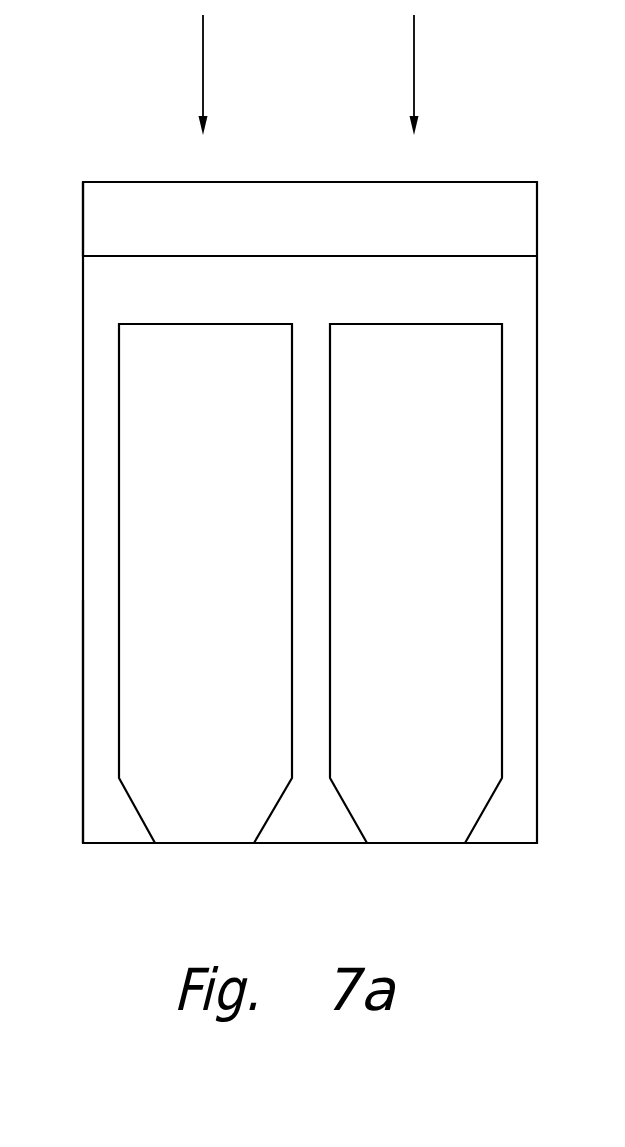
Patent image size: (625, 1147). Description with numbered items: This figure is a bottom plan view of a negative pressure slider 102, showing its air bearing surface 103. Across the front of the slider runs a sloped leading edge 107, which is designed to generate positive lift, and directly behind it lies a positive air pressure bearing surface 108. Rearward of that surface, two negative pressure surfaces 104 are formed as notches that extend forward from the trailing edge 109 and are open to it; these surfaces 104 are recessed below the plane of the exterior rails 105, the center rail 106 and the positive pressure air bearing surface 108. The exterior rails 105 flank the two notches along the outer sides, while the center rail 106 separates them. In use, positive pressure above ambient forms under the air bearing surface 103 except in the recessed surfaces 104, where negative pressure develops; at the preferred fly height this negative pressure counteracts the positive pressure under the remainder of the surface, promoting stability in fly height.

The negative pressure slider 102 is at (83, 265).
The air bearing surface 103 is at (58, 870).
The negative pressure surfaces 104 is at (310, 468).
The exterior rails 105 is at (103, 427).
The center rail 106 is at (353, 434).
The sloped leading edge 107 is at (553, 163).
The positive air pressure bearing surface 108 is at (556, 285).
The trailing edge 109 is at (233, 883).